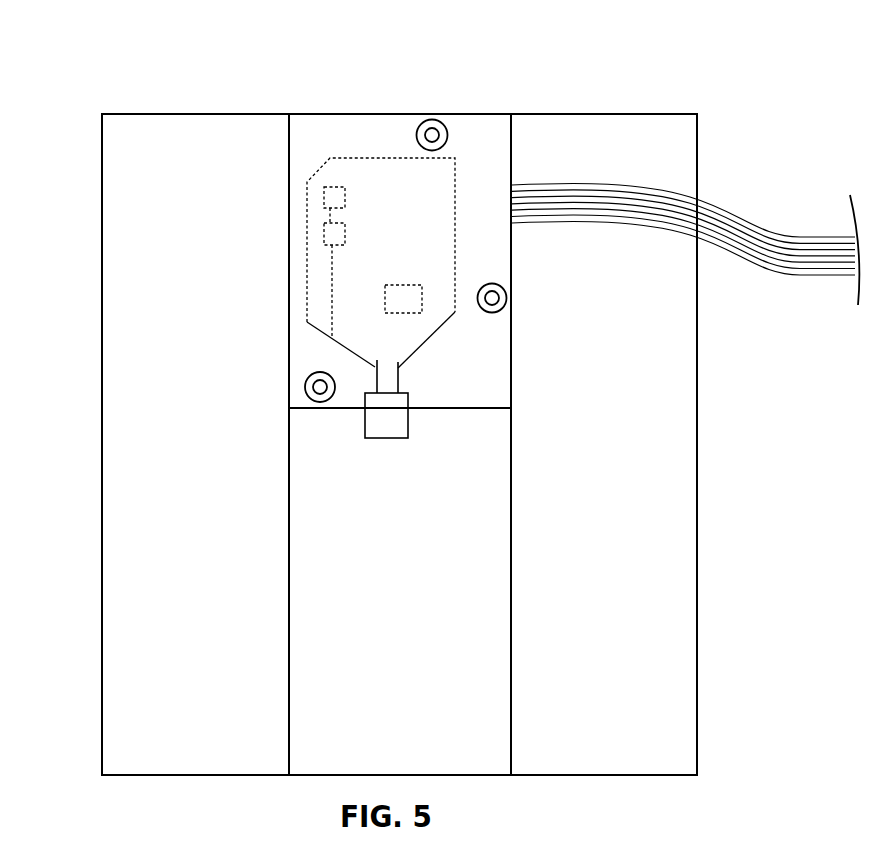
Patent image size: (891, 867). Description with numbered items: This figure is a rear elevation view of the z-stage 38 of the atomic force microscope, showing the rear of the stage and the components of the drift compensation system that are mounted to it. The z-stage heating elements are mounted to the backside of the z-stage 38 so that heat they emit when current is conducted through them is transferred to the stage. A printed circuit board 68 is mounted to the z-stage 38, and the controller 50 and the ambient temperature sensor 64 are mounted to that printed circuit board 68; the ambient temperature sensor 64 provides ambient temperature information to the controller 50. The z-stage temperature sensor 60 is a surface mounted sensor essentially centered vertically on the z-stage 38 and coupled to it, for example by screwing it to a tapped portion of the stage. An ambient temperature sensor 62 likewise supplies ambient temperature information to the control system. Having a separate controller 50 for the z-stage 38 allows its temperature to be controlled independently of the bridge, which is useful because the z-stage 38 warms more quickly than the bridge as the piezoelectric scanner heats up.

The z-stage 38 is at (705, 85).
The controller 50 is at (403, 303).
The z-stage temperature sensor 60 is at (324, 197).
The ambient temperature sensor 62 is at (388, 420).
The ambient temperature sensor 64 is at (324, 231).
The printed circuit board 68 is at (425, 340).